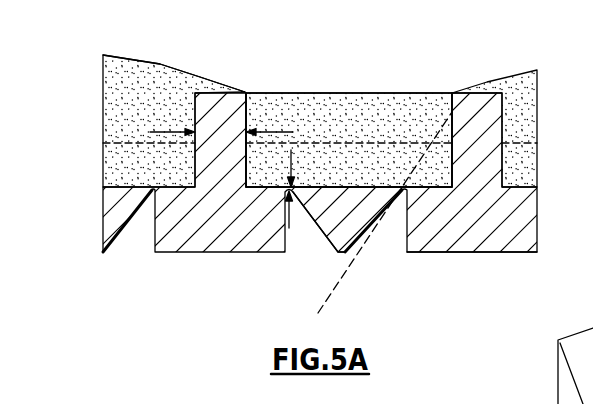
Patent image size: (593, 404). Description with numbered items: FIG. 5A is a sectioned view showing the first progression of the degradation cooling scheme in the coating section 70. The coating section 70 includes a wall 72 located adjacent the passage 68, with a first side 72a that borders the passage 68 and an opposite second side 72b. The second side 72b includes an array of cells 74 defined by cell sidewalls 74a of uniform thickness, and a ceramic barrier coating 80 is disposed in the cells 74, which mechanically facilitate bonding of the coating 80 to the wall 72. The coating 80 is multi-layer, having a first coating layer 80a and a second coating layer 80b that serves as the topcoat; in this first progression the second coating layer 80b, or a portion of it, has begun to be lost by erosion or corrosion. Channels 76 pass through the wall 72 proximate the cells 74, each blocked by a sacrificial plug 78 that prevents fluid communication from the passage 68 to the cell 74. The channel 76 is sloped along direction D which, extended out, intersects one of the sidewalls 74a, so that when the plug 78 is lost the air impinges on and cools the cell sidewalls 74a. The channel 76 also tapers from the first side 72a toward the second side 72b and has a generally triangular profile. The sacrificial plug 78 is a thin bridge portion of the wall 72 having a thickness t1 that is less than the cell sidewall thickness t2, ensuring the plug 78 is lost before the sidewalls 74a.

The coating section 70 is at (90, 230).
The wall 72 is at (181, 262).
The first side 72a is at (438, 252).
The second side 72b is at (104, 181).
The cell 74 is at (327, 110).
The cell sidewall 74a is at (253, 108).
The channel 76 is at (386, 252).
The sacrificial plug 78 is at (400, 178).
The coating 80 is at (125, 58).
The first coating layer 80a is at (113, 165).
The second coating layer 80b is at (113, 72).
The passage 68 is at (369, 323).
The thickness of the thin bridge portion t1 is at (289, 228).
The thickness of the cell sidewalls t2 is at (156, 131).
The direction D is at (338, 284).